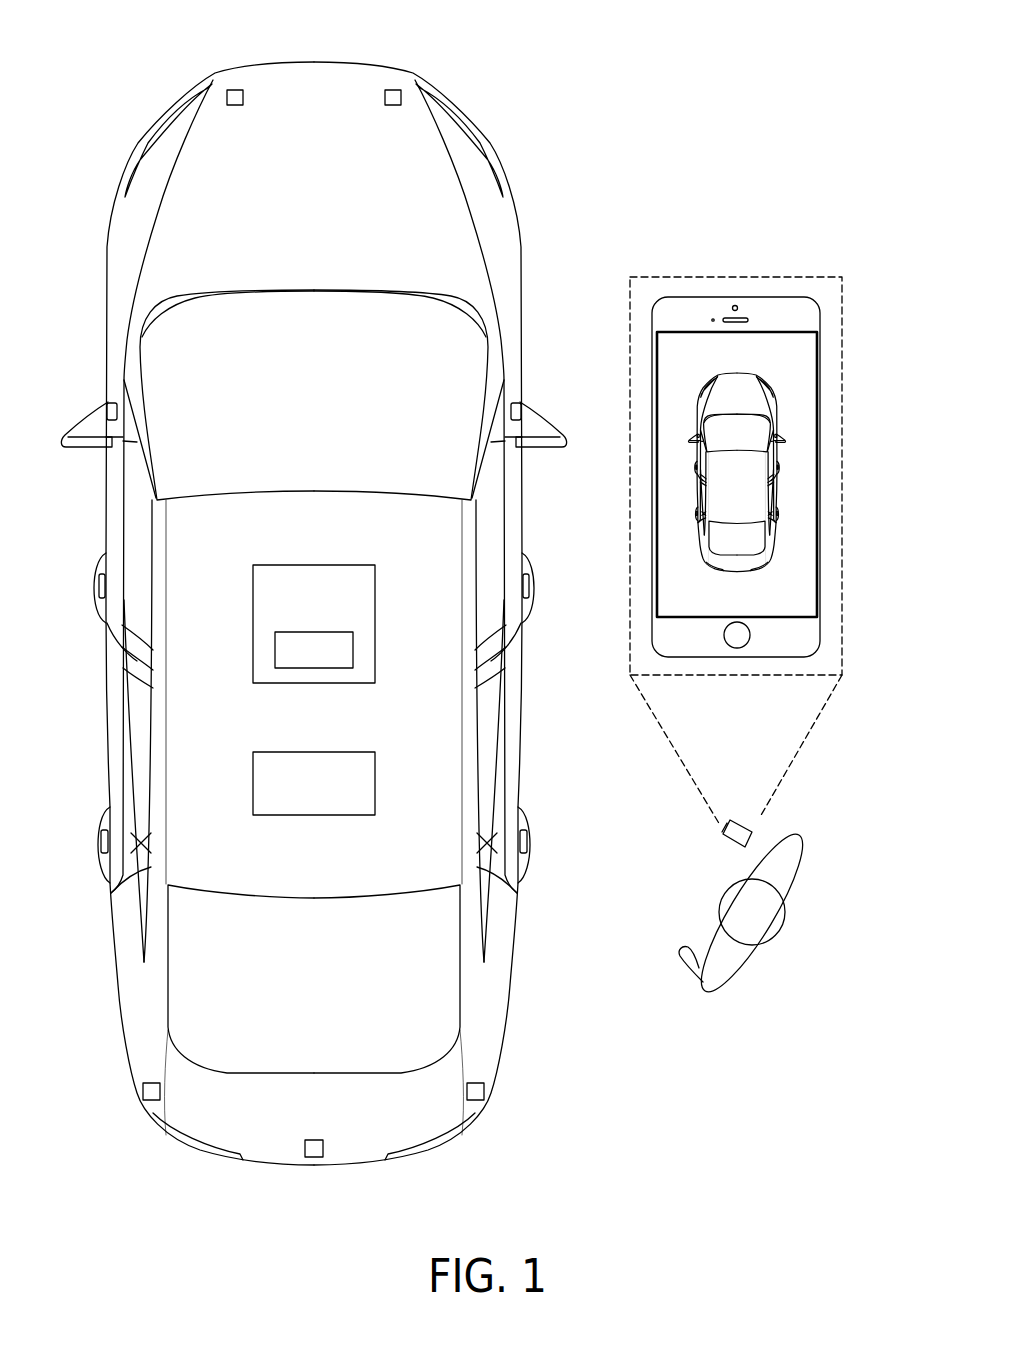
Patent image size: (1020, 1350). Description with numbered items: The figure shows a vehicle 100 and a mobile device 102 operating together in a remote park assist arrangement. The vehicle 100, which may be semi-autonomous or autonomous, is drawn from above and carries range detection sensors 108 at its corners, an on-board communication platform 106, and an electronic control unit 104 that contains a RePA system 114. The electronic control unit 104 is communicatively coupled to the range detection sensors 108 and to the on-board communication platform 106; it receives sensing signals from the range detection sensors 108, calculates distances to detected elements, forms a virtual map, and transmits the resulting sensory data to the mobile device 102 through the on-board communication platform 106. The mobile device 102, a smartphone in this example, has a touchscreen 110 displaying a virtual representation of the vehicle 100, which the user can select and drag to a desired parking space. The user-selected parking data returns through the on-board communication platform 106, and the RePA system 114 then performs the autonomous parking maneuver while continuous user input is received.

The vehicle 100 is at (313, 61).
The mobile device 102 is at (765, 612).
The electronic control unit 104 is at (253, 597).
The on-board communication platform 106 is at (253, 786).
The range detection sensors 108 is at (234, 88).
The touchscreen 110 is at (800, 362).
The RePA system 114 is at (275, 649).